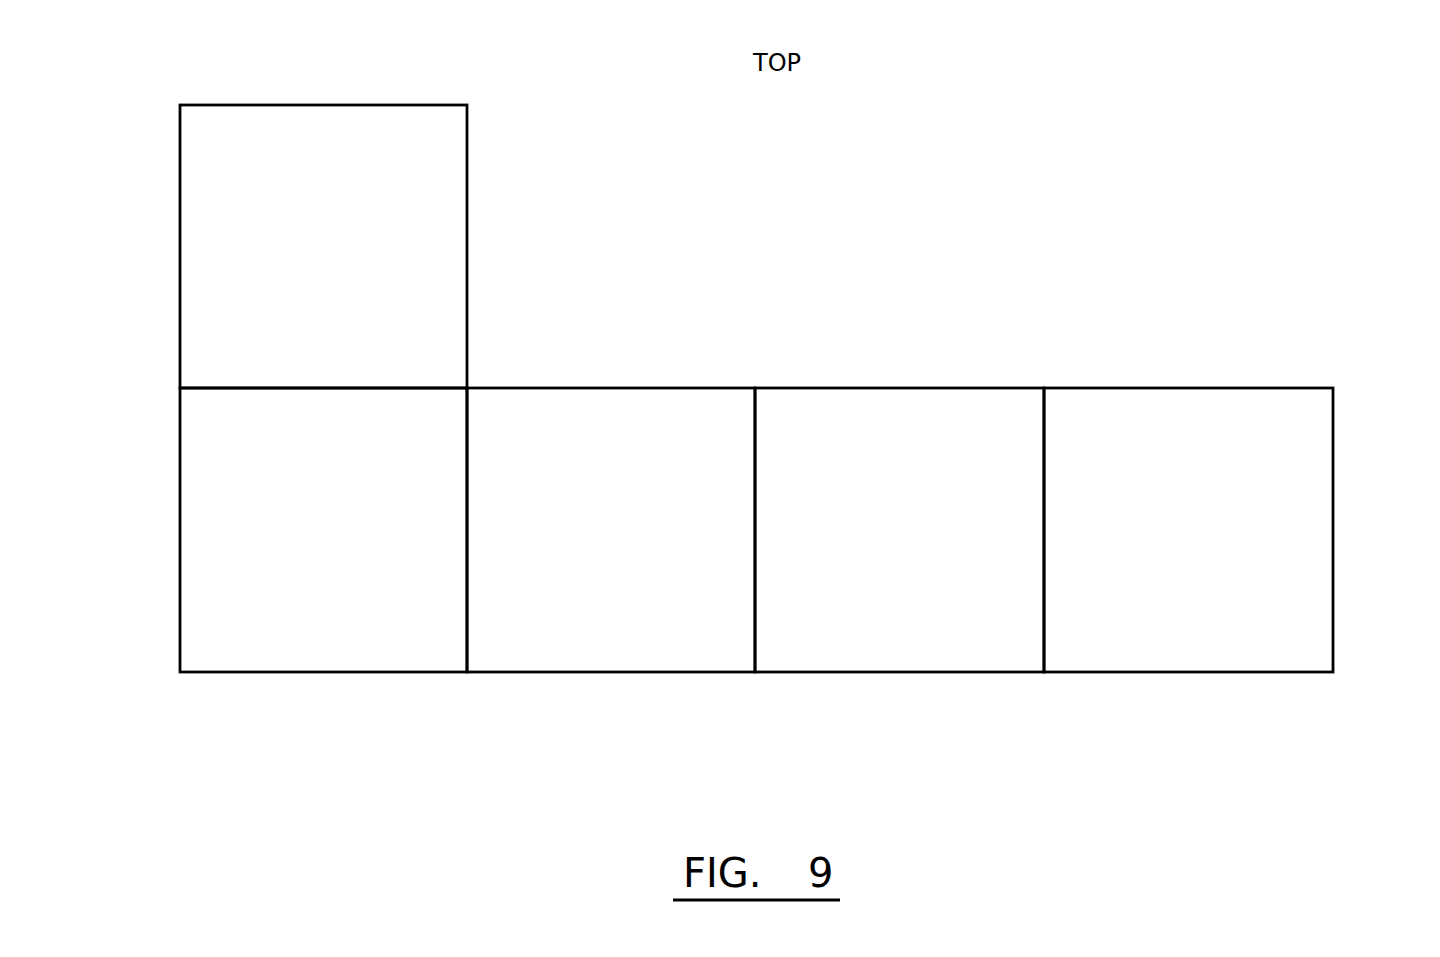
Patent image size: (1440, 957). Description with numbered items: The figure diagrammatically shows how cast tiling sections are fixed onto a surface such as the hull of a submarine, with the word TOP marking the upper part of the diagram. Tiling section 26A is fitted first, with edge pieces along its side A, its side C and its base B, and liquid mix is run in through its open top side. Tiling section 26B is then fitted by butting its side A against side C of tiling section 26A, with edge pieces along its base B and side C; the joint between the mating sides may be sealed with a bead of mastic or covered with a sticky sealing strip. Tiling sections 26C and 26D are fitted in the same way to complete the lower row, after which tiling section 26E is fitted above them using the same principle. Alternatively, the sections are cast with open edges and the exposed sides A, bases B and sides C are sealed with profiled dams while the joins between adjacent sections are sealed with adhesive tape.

The tiling section 26A is at (352, 534).
The tiling section 26B is at (641, 534).
The tiling section 26C is at (941, 534).
The tiling section 26D is at (1225, 534).
The tiling section 26E is at (351, 251).
The side A is at (180, 227).
The base B is at (285, 388).
The side C is at (467, 218).